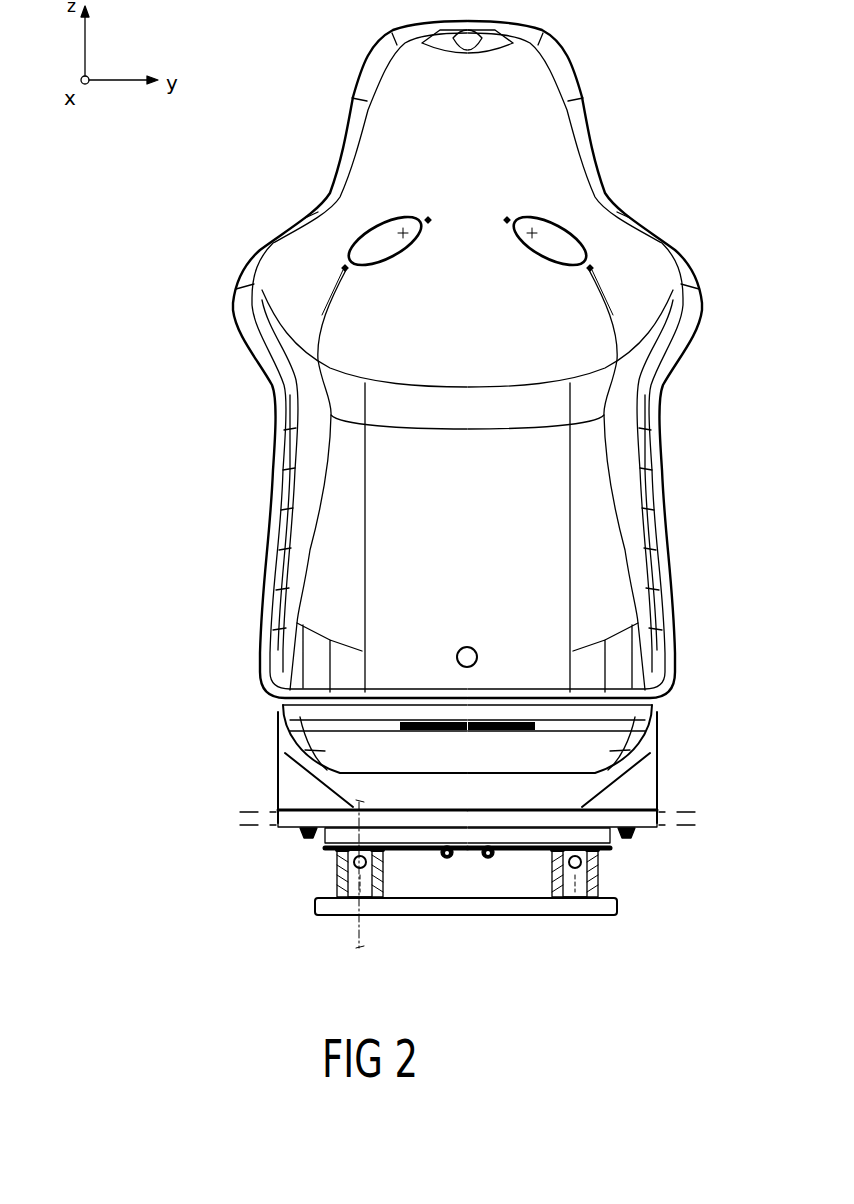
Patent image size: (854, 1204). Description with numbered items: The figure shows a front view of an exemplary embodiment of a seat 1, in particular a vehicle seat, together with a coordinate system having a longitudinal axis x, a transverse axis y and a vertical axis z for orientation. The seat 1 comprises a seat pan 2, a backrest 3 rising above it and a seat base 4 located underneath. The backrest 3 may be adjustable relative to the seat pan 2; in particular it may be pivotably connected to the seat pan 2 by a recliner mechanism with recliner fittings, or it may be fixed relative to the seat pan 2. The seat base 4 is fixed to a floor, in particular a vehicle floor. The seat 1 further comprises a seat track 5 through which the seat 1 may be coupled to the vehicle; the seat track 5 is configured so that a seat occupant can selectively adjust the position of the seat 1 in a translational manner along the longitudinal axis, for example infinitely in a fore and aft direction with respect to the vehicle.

The seat 1 is at (200, 247).
The seat pan 2 is at (653, 706).
The backrest 3 is at (590, 170).
The seat base 4 is at (328, 907).
The seat track 5 is at (330, 865).